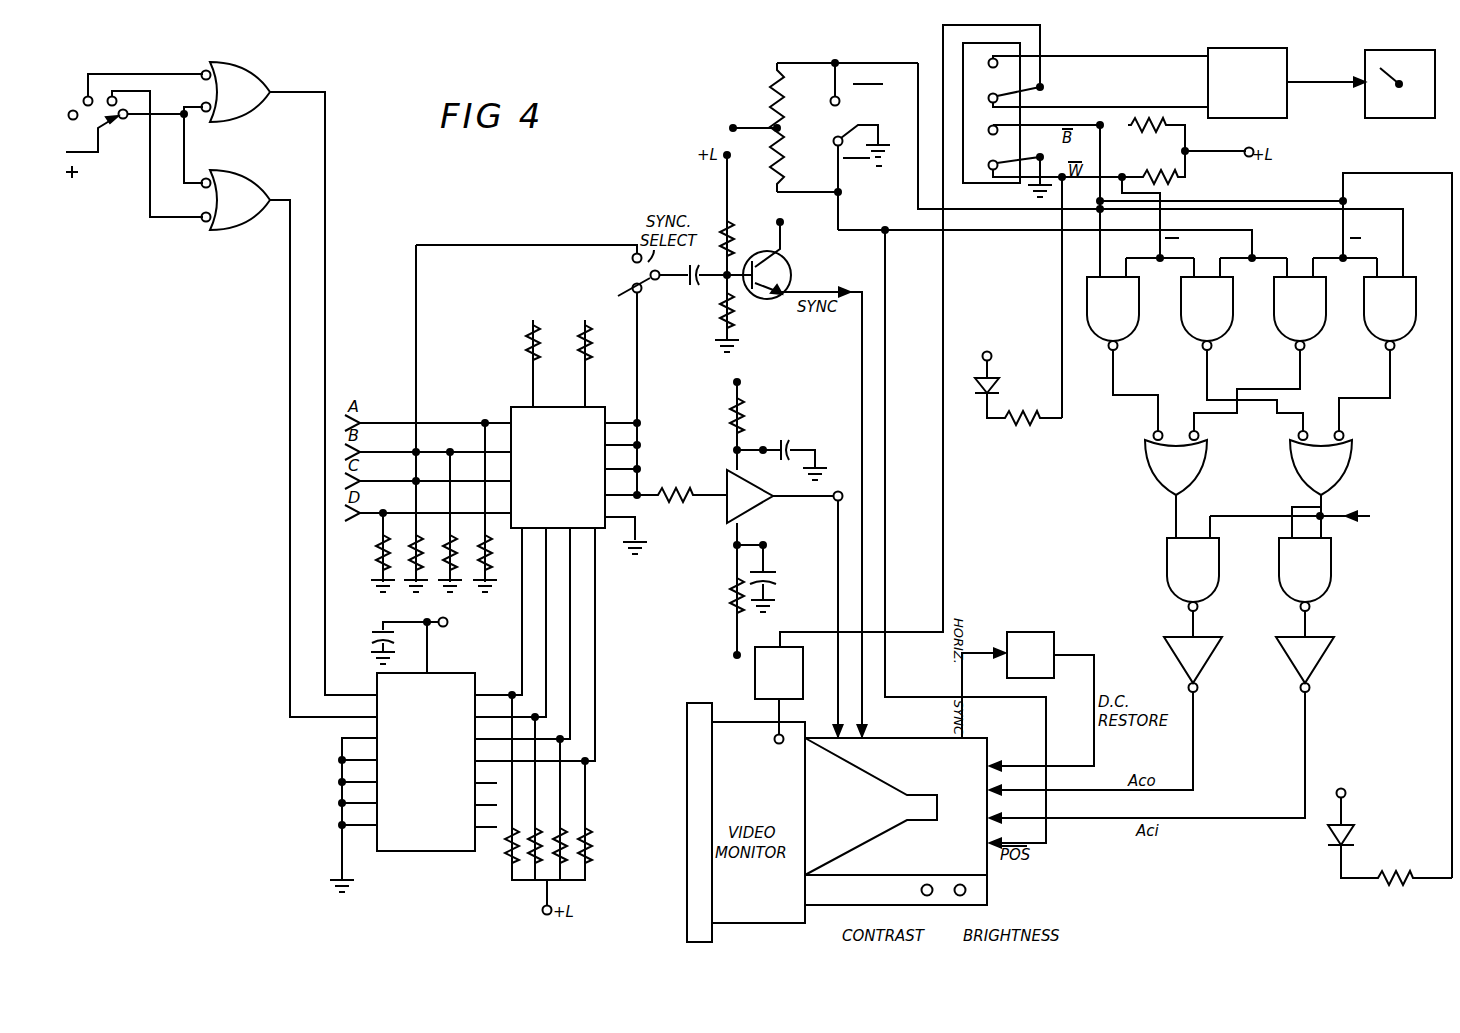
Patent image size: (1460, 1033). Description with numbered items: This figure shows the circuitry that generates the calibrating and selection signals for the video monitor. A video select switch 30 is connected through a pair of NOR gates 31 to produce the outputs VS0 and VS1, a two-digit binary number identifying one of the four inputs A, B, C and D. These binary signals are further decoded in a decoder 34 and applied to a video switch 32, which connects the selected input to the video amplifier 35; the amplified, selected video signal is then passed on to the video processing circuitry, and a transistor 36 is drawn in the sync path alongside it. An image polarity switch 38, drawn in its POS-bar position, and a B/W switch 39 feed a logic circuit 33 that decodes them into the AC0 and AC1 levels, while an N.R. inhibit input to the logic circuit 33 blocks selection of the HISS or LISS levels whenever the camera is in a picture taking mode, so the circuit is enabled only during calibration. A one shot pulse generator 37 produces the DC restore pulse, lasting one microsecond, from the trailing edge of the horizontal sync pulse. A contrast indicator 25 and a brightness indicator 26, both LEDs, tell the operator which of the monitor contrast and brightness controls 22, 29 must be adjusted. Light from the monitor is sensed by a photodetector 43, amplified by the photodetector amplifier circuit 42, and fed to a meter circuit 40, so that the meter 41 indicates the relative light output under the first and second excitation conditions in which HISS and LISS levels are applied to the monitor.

The contrast control 22 is at (922, 894).
The contrast indicator 25 is at (974, 386).
The brightness indicator 26 is at (1328, 838).
The brightness control 29 is at (960, 897).
The video select switch 30 is at (84, 72).
The NOR gates 31 is at (260, 158).
The video switch 32 is at (570, 403).
The logic circuit 33 is at (1257, 479).
The decoder 34 is at (443, 673).
The video amplifier 35 is at (753, 505).
The sync transistor 36 is at (827, 271).
The one shot pulse generator 37 is at (1030, 632).
The image polarity switch 38 is at (817, 134).
The B/W switch 39 is at (1030, 50).
The meter circuit 40 is at (1269, 34).
The meter 41 is at (1413, 48).
The photodetector amplifier circuit 42 is at (803, 694).
The photodetector 43 is at (770, 742).